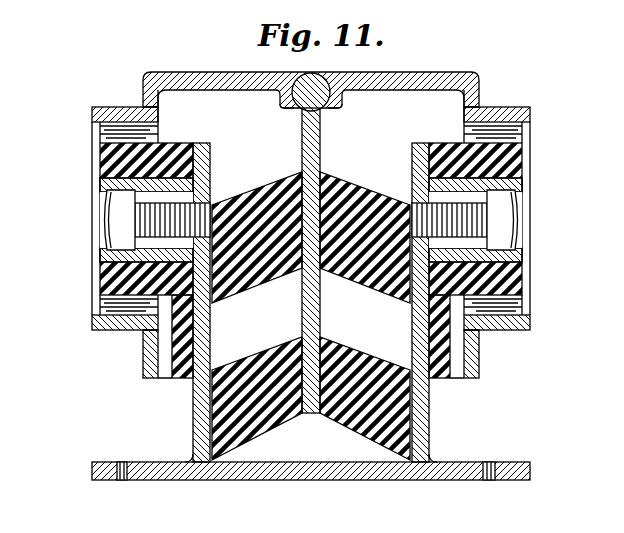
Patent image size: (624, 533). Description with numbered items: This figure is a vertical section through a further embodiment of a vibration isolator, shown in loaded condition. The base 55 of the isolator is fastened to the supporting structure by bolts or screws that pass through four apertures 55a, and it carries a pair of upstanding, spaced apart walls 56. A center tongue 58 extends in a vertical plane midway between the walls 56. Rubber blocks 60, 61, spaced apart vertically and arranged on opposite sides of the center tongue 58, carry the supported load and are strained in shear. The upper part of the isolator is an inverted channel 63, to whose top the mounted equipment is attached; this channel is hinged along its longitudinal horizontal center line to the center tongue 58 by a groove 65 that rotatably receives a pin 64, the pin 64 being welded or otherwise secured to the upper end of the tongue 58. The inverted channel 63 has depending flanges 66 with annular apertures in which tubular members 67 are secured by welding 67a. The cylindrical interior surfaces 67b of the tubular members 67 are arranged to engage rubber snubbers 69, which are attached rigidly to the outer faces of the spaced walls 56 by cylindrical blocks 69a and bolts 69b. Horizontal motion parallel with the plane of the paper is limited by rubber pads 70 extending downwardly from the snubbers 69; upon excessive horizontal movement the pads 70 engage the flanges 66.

The base 55 is at (298, 472).
The apertures 55a is at (561, 428).
The walls 56 is at (200, 410).
The center tongue 58 is at (312, 304).
The rubber block 60 is at (270, 188).
The rubber block 61 is at (353, 430).
The inverted channel 63 is at (419, 75).
The pin 64 is at (306, 85).
The groove 65 is at (336, 74).
The depending flanges 66 is at (148, 368).
The tubular members 67 is at (100, 115).
The welding 67a is at (544, 340).
The cylindrical interior surfaces 67b is at (597, 130).
The rubber snubbers 69 is at (110, 158).
The cylindrical blocks 69a is at (594, 250).
The bolts 69b is at (597, 195).
The rubber pads 70 is at (182, 373).